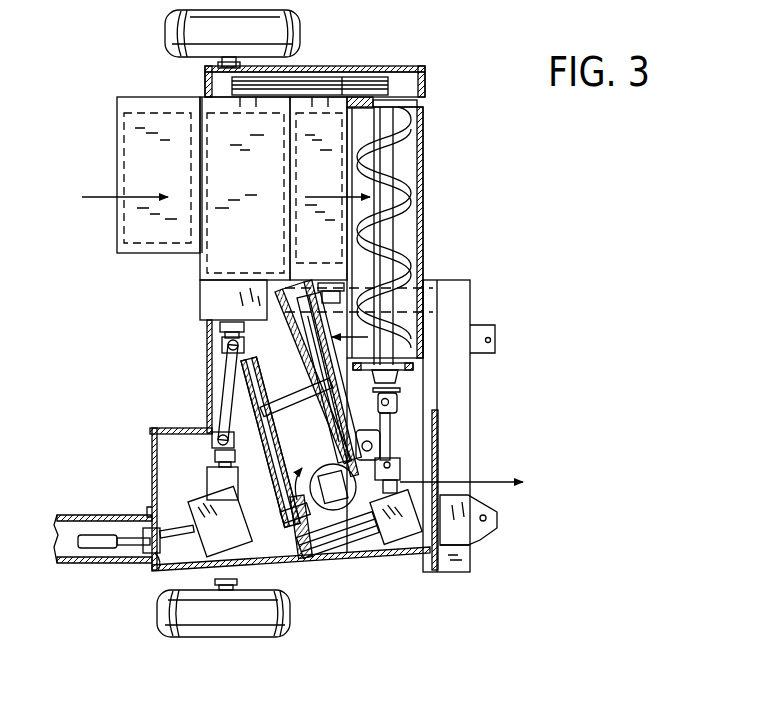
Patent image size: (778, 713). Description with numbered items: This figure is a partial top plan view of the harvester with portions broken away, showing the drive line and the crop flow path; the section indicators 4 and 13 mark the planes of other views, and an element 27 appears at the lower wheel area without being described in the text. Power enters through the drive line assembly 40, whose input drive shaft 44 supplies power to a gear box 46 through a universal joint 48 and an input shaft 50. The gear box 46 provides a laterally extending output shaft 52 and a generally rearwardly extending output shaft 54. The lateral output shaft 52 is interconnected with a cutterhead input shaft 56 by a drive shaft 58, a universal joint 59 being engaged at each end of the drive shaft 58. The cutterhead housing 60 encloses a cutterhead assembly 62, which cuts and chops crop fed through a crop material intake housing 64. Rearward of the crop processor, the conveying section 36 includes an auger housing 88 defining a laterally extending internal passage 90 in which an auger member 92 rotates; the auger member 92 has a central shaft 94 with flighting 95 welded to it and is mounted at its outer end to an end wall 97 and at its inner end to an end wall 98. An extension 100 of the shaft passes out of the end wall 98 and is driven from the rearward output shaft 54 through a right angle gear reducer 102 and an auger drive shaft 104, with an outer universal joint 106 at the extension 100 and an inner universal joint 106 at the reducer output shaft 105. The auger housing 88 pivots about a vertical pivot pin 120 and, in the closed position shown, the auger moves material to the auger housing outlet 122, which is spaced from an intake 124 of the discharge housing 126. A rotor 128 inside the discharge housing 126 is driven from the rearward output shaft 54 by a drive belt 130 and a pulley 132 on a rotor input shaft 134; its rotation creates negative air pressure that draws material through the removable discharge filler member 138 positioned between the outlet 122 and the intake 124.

The section line 4- 4 is at (108, 180).
The section line 13- 13 is at (108, 70).
The wheel 27 is at (186, 638).
The conveying section 36 is at (478, 211).
The drive line assembly 40 is at (91, 538).
The input drive shaft 44 is at (97, 533).
The gear box 46 is at (195, 478).
The universal joint 48 is at (160, 570).
The input shaft 50 is at (176, 525).
The laterally extending output shaft 52 is at (162, 432).
The rearwardly extending output shaft 54 is at (298, 545).
The cutterhead input shaft 56 is at (220, 330).
The drive shaft 58 is at (178, 388).
The universal joint 59 is at (195, 344).
The cutterhead housing 60 is at (200, 100).
The cutterhead assembly 62 is at (273, 112).
The crop material intake housing 64 is at (115, 234).
The auger housing 88 is at (424, 133).
The internal passage 90 is at (431, 227).
The auger member 92 is at (402, 208).
The central shaft 94 is at (418, 248).
The flighting 95 is at (400, 178).
The end wall 97 is at (390, 105).
The end wall 98 is at (420, 382).
The extension 100 is at (412, 398).
The right angle gear reducer 102 is at (359, 552).
The auger drive shaft 104 is at (408, 440).
The output shaft 105 is at (458, 497).
The universal joint 106 is at (420, 415).
The pivot pin 120 is at (433, 465).
The auger housing outlet 122 is at (350, 325).
The intake 124 is at (425, 362).
The discharge housing 126 is at (310, 545).
The rotor 128 is at (523, 482).
The drive belt 130 is at (298, 516).
The pulley 132 is at (252, 365).
The rotor input shaft 134 is at (270, 287).
The discharge filler member 138 is at (326, 278).